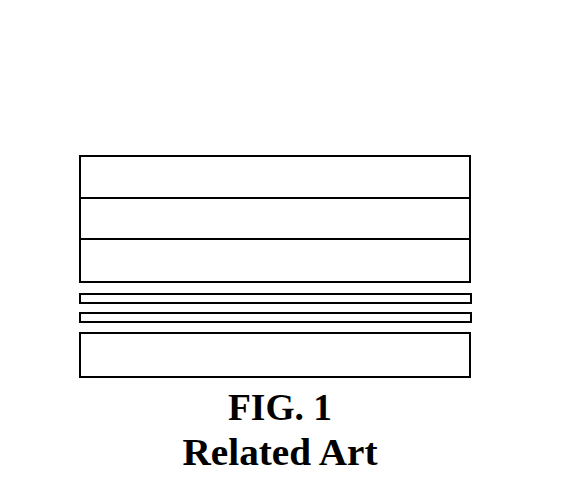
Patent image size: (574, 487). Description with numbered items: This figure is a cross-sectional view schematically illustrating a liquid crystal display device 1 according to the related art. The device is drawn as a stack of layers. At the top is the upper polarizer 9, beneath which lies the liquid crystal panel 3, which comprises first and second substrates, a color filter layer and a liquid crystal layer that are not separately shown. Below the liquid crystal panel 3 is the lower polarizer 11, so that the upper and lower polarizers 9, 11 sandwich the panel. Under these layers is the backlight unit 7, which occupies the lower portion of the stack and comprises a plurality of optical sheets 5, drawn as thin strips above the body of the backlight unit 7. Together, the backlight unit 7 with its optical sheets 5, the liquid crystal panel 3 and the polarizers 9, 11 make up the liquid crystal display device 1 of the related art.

The liquid crystal display device 1 is at (430, 110).
The upper polarizer 9 is at (457, 176).
The liquid crystal panel 3 is at (457, 212).
The lower polarizer 11 is at (457, 258).
The optical sheets 5 is at (474, 282).
The backlight unit 7 is at (78, 282).